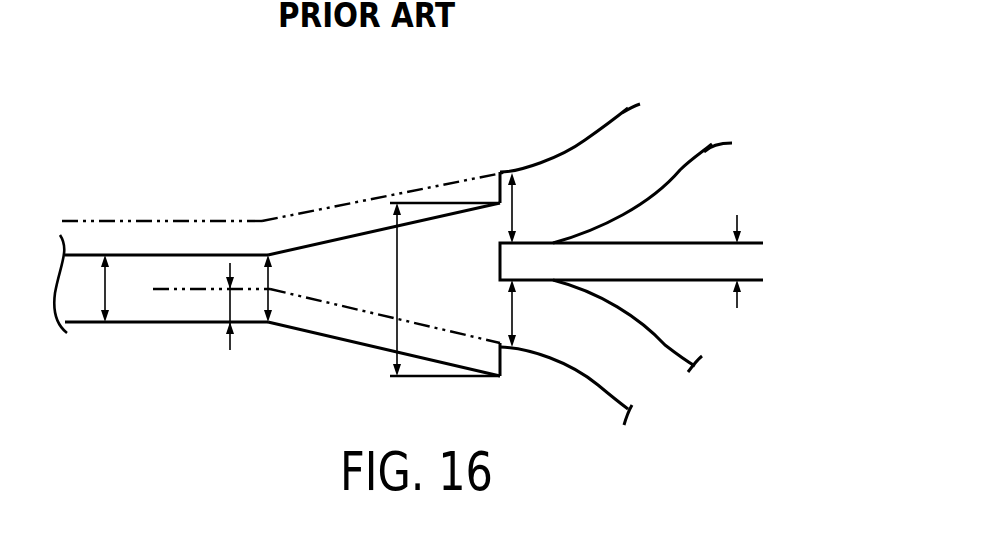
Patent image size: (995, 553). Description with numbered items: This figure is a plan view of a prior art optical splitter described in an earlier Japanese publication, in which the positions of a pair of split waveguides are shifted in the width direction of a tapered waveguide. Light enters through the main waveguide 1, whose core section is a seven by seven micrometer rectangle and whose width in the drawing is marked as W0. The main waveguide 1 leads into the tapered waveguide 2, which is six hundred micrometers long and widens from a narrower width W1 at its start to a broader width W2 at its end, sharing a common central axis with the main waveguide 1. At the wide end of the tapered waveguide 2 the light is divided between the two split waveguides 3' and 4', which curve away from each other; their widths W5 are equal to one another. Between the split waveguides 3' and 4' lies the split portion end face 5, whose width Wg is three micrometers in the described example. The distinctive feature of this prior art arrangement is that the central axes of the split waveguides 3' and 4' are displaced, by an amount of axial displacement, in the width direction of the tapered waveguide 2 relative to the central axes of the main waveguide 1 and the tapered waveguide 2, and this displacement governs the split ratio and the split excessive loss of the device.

The main waveguide 1 is at (198, 264).
The tapered waveguide 2 is at (362, 247).
The split waveguide 3' is at (618, 165).
The split waveguide 4' is at (612, 356).
The split portion end face 5 is at (499, 259).
The core width of straight section W0 is at (107, 289).
The width at taper start W1 is at (272, 289).
The width at taper end W2 is at (400, 291).
The width of split waveguide W5 is at (516, 205).
The width of split portion end face Wg is at (740, 261).